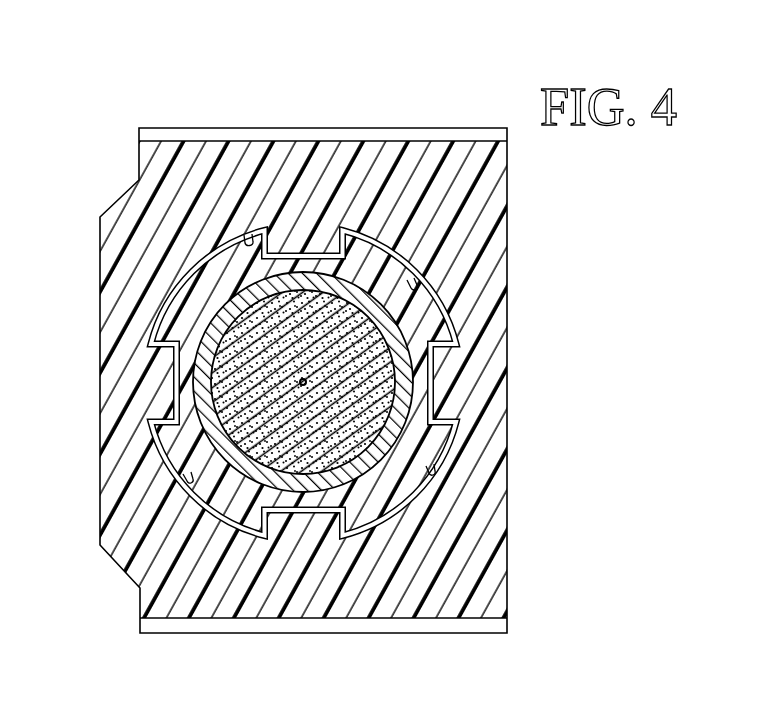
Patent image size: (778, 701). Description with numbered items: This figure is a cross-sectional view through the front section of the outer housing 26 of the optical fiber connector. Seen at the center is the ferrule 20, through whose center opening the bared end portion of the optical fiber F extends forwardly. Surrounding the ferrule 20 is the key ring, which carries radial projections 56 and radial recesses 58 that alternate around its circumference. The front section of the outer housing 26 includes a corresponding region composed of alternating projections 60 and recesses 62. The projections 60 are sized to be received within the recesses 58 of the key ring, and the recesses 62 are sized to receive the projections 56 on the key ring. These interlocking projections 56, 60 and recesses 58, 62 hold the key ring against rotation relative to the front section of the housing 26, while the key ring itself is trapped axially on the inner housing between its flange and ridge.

The outer housing 26 is at (446, 88).
The ferrule 20 is at (407, 327).
The radial projections 56 is at (388, 270).
The radial recesses 58 is at (323, 252).
The projections 60 is at (283, 226).
The recesses 62 is at (247, 236).
The optical fiber F is at (303, 385).